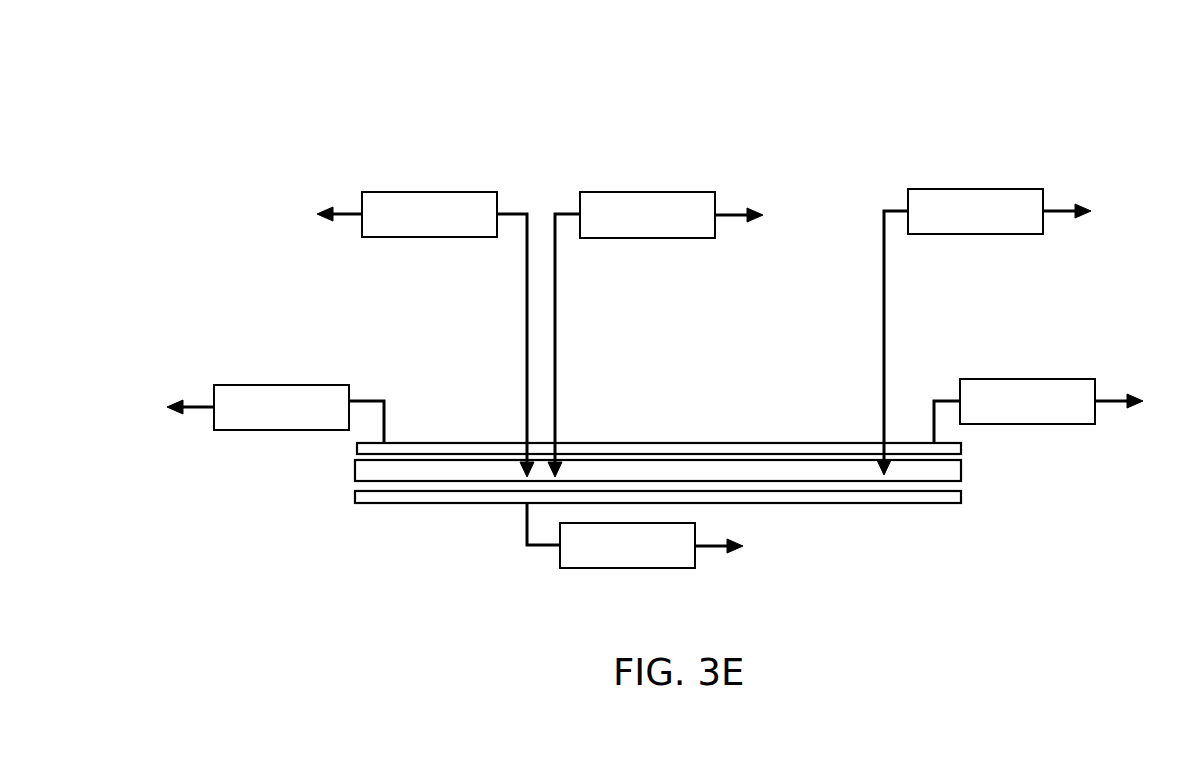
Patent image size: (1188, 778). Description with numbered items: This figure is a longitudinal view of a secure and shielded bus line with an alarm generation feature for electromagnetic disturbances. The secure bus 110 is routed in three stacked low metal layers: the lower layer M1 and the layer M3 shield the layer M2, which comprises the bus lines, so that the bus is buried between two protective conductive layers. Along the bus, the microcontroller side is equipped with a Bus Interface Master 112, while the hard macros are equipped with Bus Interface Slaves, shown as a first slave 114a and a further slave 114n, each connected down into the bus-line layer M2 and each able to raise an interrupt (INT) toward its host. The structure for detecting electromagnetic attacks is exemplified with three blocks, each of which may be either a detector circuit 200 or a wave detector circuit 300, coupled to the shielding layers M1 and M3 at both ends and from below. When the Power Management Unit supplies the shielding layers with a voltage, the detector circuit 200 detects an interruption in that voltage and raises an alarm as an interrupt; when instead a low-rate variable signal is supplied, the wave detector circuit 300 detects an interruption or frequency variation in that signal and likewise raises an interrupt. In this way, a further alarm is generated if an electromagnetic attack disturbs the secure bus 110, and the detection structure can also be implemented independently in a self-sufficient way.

The secure bus 110 is at (884, 103).
The Bus Interface Master 112 is at (403, 212).
The Bus Interface Slave 114a is at (653, 214).
The Bus Interface Slave 114n is at (982, 211).
The detector circuit 200 is at (649, 476).
The wave detector circuit 300 is at (255, 405).
The lower metal layer M1 is at (955, 520).
The metal layer comprising the bus lines M2 is at (845, 468).
The upper shielding metal layer M3 is at (972, 428).